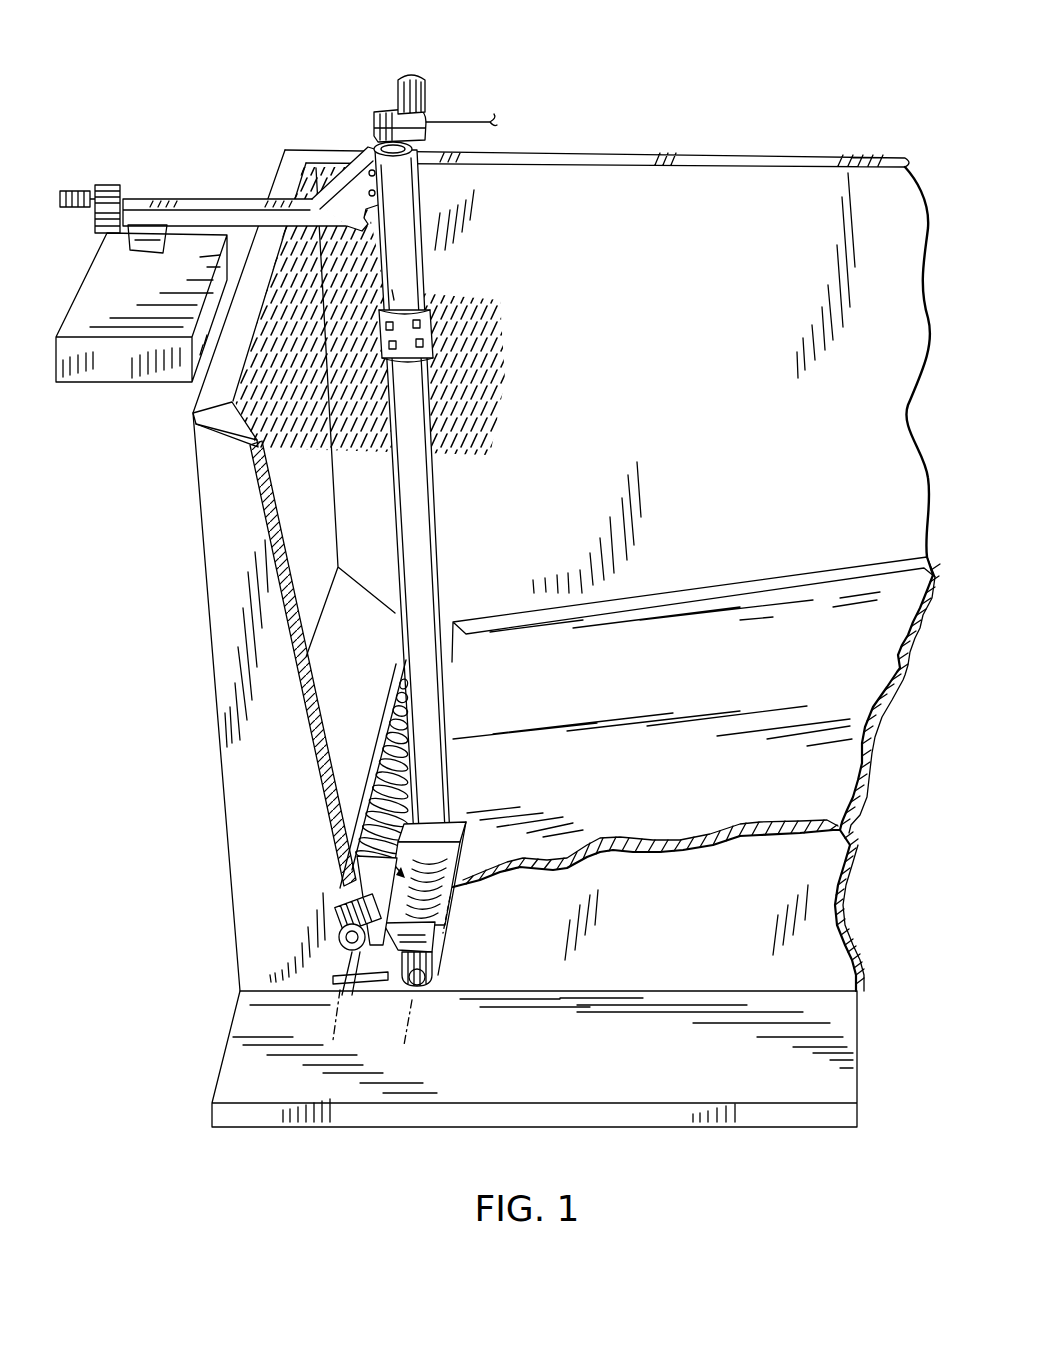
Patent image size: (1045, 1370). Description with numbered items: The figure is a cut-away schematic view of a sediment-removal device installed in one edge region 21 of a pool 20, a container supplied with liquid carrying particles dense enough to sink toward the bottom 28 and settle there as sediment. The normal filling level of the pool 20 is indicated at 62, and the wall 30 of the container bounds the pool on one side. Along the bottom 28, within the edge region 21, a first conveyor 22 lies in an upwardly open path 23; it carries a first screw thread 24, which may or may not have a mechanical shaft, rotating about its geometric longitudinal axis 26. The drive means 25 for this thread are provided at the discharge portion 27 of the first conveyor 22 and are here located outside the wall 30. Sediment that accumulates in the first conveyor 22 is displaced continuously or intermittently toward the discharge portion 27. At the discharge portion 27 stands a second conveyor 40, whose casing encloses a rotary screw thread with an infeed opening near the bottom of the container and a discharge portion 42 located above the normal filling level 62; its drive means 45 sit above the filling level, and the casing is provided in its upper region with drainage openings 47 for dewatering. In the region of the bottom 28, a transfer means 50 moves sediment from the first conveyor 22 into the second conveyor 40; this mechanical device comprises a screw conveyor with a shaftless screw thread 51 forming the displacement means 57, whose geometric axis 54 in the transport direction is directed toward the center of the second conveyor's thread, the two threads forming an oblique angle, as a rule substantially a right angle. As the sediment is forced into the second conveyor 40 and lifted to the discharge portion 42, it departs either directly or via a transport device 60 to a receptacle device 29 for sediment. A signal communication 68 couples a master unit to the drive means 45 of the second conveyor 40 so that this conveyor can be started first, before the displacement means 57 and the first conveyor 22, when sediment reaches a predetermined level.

The pool 20 is at (207, 809).
The edge region 21 is at (466, 640).
The first conveyor 22 is at (385, 822).
The upwardly open path 23 is at (386, 712).
The first screw thread 24 is at (395, 748).
The drive means 25 is at (337, 937).
The geometric longitudinal axis 26 is at (347, 970).
The discharge portion 27 is at (350, 892).
The bottom 28 is at (633, 822).
The receptacle device 29 is at (168, 380).
The wall 30 is at (222, 672).
The second conveyor 40 is at (433, 490).
The discharge portion 42 is at (385, 258).
The drive means 45 is at (427, 87).
The drainage openings 47 is at (415, 309).
The transfer means 50 is at (377, 967).
The screw thread 51 is at (440, 927).
The geometric axis 54 is at (416, 1023).
The displacement means 57 is at (456, 892).
The transport device 60 is at (188, 198).
The normal filling level 62 is at (250, 458).
The signal communication 68 is at (460, 122).